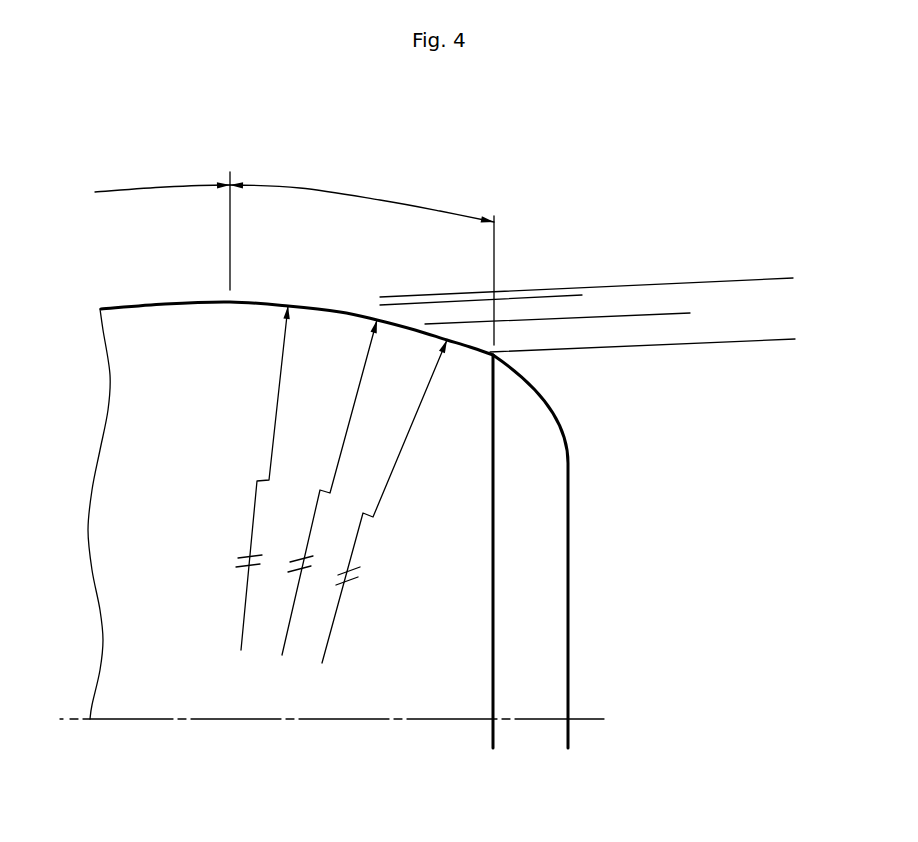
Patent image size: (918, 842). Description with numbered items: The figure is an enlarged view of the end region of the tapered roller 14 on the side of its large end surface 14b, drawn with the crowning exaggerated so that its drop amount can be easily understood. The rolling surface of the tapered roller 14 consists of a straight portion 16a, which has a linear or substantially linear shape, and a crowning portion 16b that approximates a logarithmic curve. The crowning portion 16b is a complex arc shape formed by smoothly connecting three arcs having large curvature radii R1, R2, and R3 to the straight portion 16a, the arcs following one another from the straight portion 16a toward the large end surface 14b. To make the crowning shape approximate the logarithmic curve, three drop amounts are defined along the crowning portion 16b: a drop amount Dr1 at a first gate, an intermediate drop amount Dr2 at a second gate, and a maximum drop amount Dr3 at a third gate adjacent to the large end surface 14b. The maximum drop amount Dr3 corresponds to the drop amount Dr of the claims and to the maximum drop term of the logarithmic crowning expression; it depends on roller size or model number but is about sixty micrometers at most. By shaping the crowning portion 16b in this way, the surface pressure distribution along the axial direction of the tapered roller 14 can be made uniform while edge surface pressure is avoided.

The tapered roller 14 is at (168, 360).
The large end surface 14b is at (568, 597).
The straight portion 16a is at (160, 187).
The crowning portion 16b is at (355, 192).
The curvature radius R1 is at (273, 410).
The curvature radius R2 is at (348, 425).
The curvature radius R3 is at (400, 470).
The drop amount Dr1 is at (570, 318).
The intermediate drop amount Dr2 is at (677, 332).
The maximum drop amount Dr3 is at (782, 362).